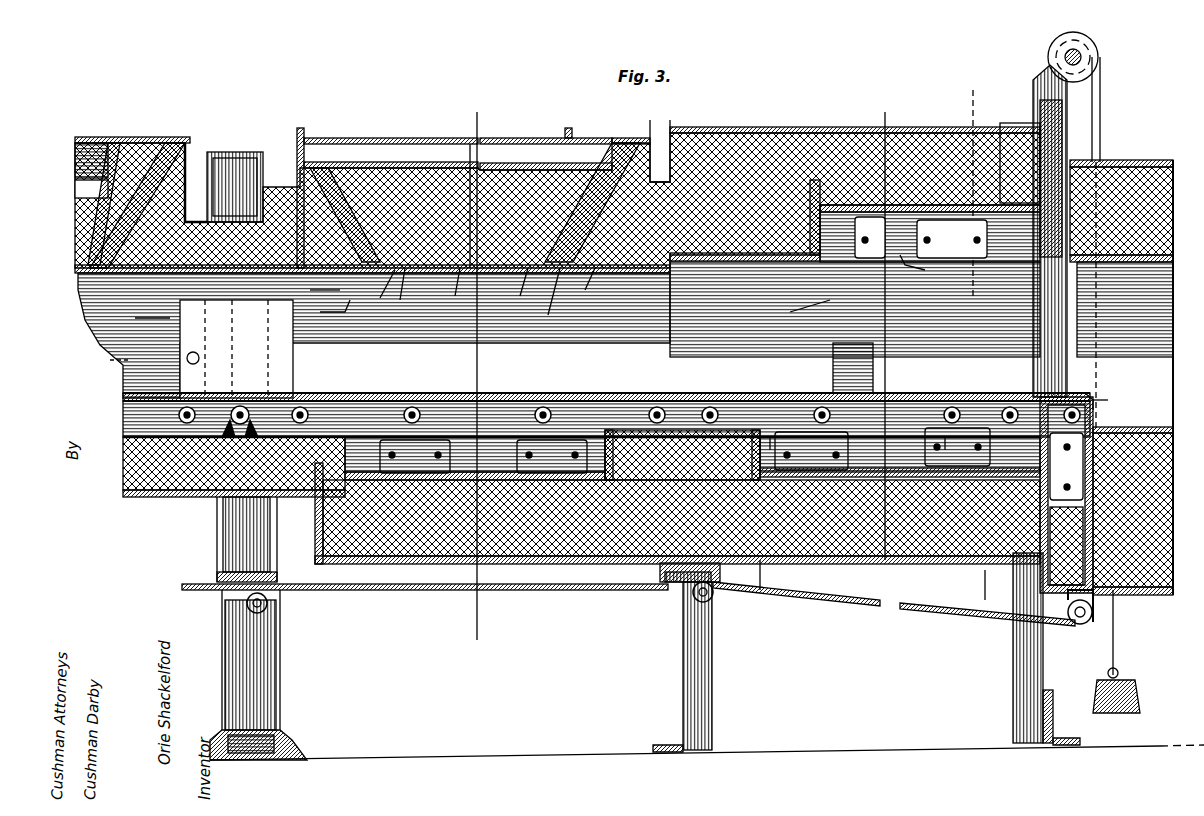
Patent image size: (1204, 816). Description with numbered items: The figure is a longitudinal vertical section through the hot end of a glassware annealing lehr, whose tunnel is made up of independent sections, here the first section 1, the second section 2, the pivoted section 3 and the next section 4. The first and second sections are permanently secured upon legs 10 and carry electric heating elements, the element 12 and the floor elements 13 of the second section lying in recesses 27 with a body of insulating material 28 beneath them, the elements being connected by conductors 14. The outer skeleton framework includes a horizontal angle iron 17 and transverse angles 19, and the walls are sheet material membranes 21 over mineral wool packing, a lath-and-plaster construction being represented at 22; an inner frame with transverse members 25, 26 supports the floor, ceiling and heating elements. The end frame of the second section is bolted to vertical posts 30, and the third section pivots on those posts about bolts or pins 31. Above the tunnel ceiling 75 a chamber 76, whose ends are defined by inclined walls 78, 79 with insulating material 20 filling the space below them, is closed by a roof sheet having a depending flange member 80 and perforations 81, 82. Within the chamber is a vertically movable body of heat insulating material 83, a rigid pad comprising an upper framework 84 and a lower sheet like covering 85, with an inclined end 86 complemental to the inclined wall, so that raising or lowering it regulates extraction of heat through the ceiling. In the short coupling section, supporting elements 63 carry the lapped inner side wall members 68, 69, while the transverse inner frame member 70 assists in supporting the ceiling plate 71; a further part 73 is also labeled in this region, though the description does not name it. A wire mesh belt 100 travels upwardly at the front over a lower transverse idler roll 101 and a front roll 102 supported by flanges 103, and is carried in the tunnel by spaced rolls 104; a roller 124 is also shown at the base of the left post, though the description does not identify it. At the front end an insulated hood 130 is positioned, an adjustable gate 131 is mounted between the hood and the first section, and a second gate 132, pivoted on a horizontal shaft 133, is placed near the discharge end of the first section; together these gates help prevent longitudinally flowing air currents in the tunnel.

The first section 1 is at (802, 121).
The second section 2 is at (305, 138).
The section 3 is at (182, 136).
The section 4 is at (966, 103).
The legs 10 is at (243, 280).
The electric heating element 12 is at (770, 440).
The electric heating element 13 is at (540, 445).
The conductors 14 is at (930, 240).
The horizontal angle iron 17 is at (905, 268).
The transverse angles 19 is at (695, 130).
The insulating material 20 is at (190, 200).
The sheet material membranes 21 is at (742, 135).
The metal lath covered with insulating cement or plaster 22 is at (800, 595).
The transverse member 25 is at (660, 143).
The transverse member 26 is at (640, 568).
The recesses 27 is at (465, 480).
The body of insulating material 28 is at (330, 560).
The vertical posts 30 is at (262, 664).
The bolts or pins 31 is at (110, 360).
The supporting elements 63 is at (242, 404).
The lapped inner side wall member 68 is at (342, 312).
The lapped inner side wall member 69 is at (145, 318).
The transverse inner frame member 70 is at (630, 262).
The ceiling plate 71 is at (333, 292).
The strip 73 is at (401, 292).
The ceiling 75 is at (385, 210).
The chamber 76 is at (548, 215).
The inclined wall 78 is at (58, 280).
The inclined wall 79 is at (477, 140).
The depending flange member 80 is at (113, 143).
The perforations 81 is at (82, 140).
The perforations 82 is at (166, 143).
The body of heat insulating material 83 is at (58, 214).
The upper framework 84 is at (375, 162).
The lower sheet like covering 85 is at (451, 288).
The inclined end 86 is at (58, 242).
The wire mesh belt 100 is at (200, 592).
The lower transverse idler roll 101 is at (1080, 626).
The front roll 102 is at (1097, 400).
The flanges 103 is at (1066, 495).
The rolls 104 is at (325, 398).
The roller 124 is at (270, 605).
The insulated hood 130 is at (1115, 167).
The adjustable gate 131 is at (1067, 130).
The gate 132 is at (833, 360).
The horizontal shaft 133 is at (792, 315).